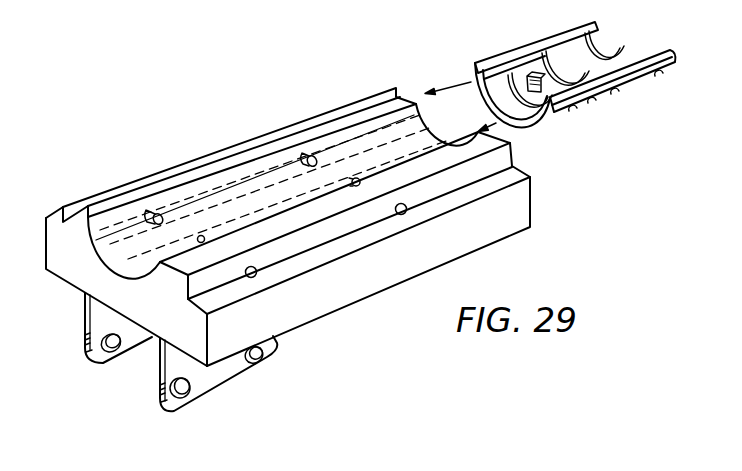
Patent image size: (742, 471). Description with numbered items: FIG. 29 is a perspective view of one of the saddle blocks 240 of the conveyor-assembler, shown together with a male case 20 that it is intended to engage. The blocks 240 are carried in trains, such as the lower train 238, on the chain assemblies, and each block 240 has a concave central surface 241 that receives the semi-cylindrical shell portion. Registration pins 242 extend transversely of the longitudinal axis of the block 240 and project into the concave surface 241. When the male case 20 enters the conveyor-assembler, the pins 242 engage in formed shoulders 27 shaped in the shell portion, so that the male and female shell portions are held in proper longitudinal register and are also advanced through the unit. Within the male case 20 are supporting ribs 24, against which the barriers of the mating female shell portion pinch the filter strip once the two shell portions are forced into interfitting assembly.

The conveyor block 240 is at (238, 145).
The concave central surface 241 is at (100, 248).
The registration pin 242 is at (318, 157).
The male case 20 is at (677, 62).
The supporting rib 24 is at (605, 52).
The formed shoulder 27 is at (538, 74).
The conveyor block train 238 is at (249, 7).